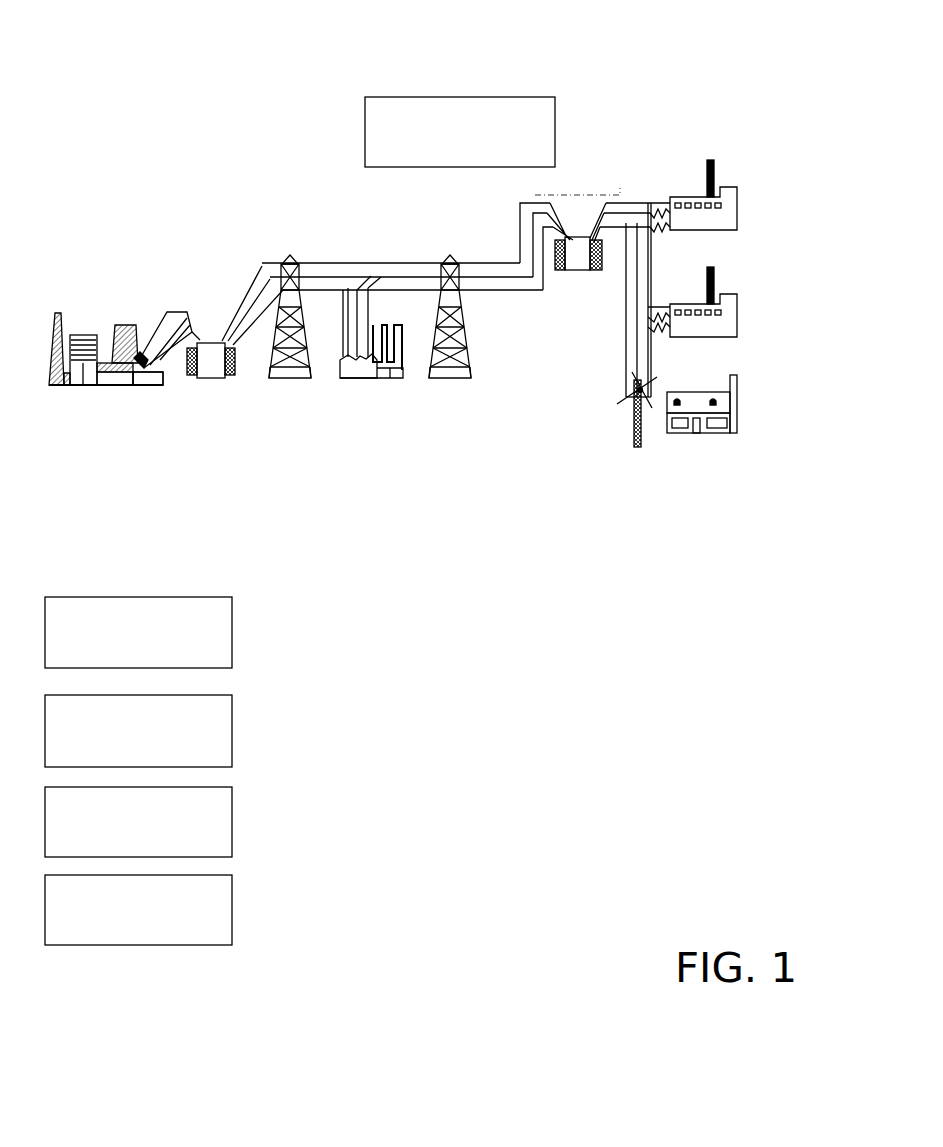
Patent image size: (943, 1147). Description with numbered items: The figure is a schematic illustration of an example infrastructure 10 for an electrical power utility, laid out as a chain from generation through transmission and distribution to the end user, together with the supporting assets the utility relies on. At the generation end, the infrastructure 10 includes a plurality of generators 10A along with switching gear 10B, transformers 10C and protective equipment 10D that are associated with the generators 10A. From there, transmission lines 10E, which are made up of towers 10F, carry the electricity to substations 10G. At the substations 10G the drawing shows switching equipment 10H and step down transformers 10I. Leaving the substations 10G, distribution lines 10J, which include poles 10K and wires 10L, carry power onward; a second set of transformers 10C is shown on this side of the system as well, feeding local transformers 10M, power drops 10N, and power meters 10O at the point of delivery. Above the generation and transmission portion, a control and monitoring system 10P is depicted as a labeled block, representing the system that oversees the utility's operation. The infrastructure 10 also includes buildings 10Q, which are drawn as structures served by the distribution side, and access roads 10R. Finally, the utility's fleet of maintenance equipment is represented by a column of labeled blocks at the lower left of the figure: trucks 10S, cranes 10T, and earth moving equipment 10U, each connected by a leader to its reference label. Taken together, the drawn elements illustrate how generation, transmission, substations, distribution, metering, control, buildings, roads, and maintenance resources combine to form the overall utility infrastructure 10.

The infrastructure 10 is at (706, 80).
The generators 10A is at (85, 388).
The switching gear 10B is at (105, 357).
The transformers 10C is at (218, 357).
The protective equipment 10D is at (138, 398).
The transmission lines 10E is at (328, 258).
The towers 10F is at (298, 380).
The substations 10G is at (352, 385).
The switching equipment 10H is at (368, 380).
The step down transformers 10I is at (388, 380).
The distribution lines 10J is at (595, 372).
The poles 10K is at (623, 428).
The wires 10L is at (632, 293).
The local transformers 10M is at (648, 402).
The power drops 10N is at (664, 338).
The power meters 10O is at (674, 434).
The control and monitoring system 10P is at (459, 97).
The buildings 10Q is at (728, 214).
The access roads 10R is at (232, 618).
The trucks 10S is at (232, 722).
The cranes 10T is at (232, 818).
The earth moving equipment 10U is at (232, 908).